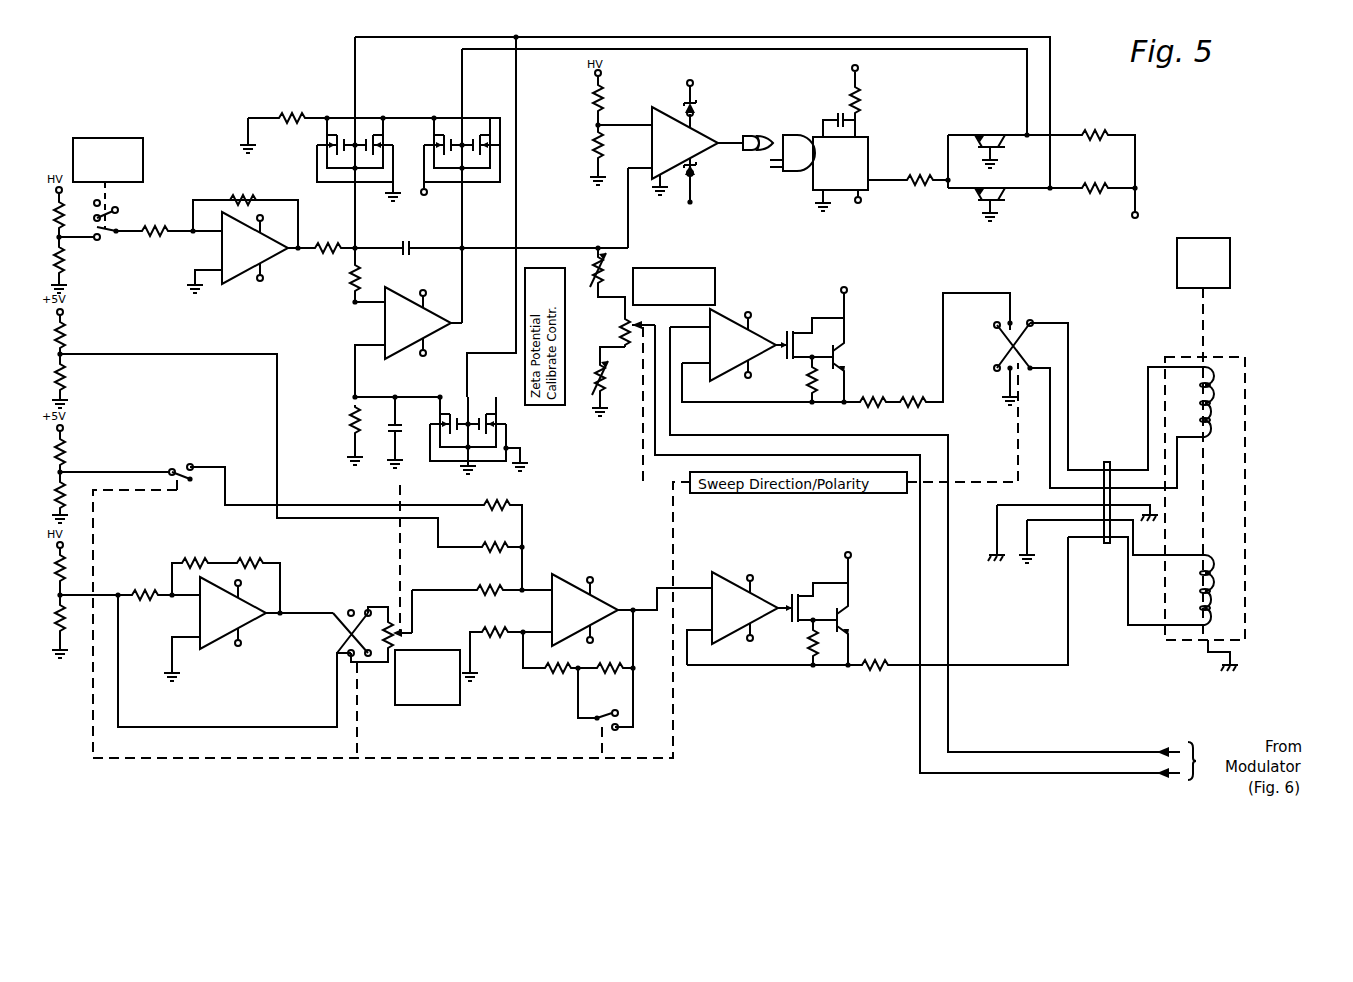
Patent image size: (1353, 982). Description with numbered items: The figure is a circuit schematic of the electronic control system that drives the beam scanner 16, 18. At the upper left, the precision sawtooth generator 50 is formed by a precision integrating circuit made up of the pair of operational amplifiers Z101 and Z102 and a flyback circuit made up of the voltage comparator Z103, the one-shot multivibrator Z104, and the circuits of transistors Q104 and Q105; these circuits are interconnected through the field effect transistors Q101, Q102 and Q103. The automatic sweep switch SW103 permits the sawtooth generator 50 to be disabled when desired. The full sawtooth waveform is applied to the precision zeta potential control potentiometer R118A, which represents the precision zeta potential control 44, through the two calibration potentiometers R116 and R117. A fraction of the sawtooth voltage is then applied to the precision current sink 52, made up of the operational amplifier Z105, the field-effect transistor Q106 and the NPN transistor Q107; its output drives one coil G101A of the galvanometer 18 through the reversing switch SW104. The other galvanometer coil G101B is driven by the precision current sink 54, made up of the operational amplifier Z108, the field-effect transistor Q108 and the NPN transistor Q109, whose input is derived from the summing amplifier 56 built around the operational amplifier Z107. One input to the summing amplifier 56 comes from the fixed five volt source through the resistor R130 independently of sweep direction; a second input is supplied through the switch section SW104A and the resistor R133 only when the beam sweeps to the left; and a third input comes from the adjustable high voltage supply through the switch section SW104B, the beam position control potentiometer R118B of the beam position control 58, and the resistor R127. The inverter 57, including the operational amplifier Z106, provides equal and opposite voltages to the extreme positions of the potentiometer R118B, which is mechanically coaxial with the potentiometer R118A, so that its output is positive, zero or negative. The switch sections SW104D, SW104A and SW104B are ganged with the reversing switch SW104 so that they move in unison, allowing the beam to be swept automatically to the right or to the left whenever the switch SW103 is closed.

The automatic sweep switch SW103 is at (118, 222).
The precision sawtooth generator 50 is at (341, 255).
The operational amplifier Z101 is at (240, 255).
The operational amplifier Z102 is at (400, 312).
The field effect transistor Q101 is at (363, 130).
The field effect transistor Q102 is at (470, 130).
The field effect transistor Q103 is at (485, 442).
The calibration potentiometer R116 is at (600, 270).
The calibration potentiometer R117 is at (612, 390).
The precision zeta potential control potentiometer R118A is at (612, 315).
The precision zeta potential control 44 is at (674, 286).
The voltage comparator Z103 is at (683, 143).
The one-shot multivibrator Z104 is at (855, 152).
The transistor Q104 is at (990, 140).
The transistor Q105 is at (998, 196).
The precision current sink 52 is at (882, 295).
The operational amplifier Z105 is at (737, 345).
The field-effect transistor Q106 is at (783, 362).
The NPN transistor Q107 is at (835, 356).
The reversing switch SW104 is at (1040, 346).
The beam scanner 16 is at (1205, 250).
The galvanometer 18 is at (1164, 532).
The galvanometer coil G101A is at (1215, 402).
The galvanometer coil G101B is at (1263, 590).
The switch section SW104A is at (178, 468).
The inverter 57 is at (234, 642).
The operational amplifier Z106 is at (218, 602).
The switch section SW104B is at (347, 612).
The beam position control potentiometer R118B is at (392, 642).
The beam position control 58 is at (432, 700).
The summing amplifier 56 is at (593, 603).
The resistor R130 is at (500, 520).
The resistor R133 is at (495, 562).
The resistor R127 is at (490, 605).
The operational amplifier Z107 is at (590, 614).
The switch section SW104D is at (603, 722).
The precision current sink 54 is at (875, 533).
The operational amplifier Z108 is at (727, 592).
The field-effect transistor Q108 is at (782, 595).
The NPN transistor Q109 is at (840, 608).